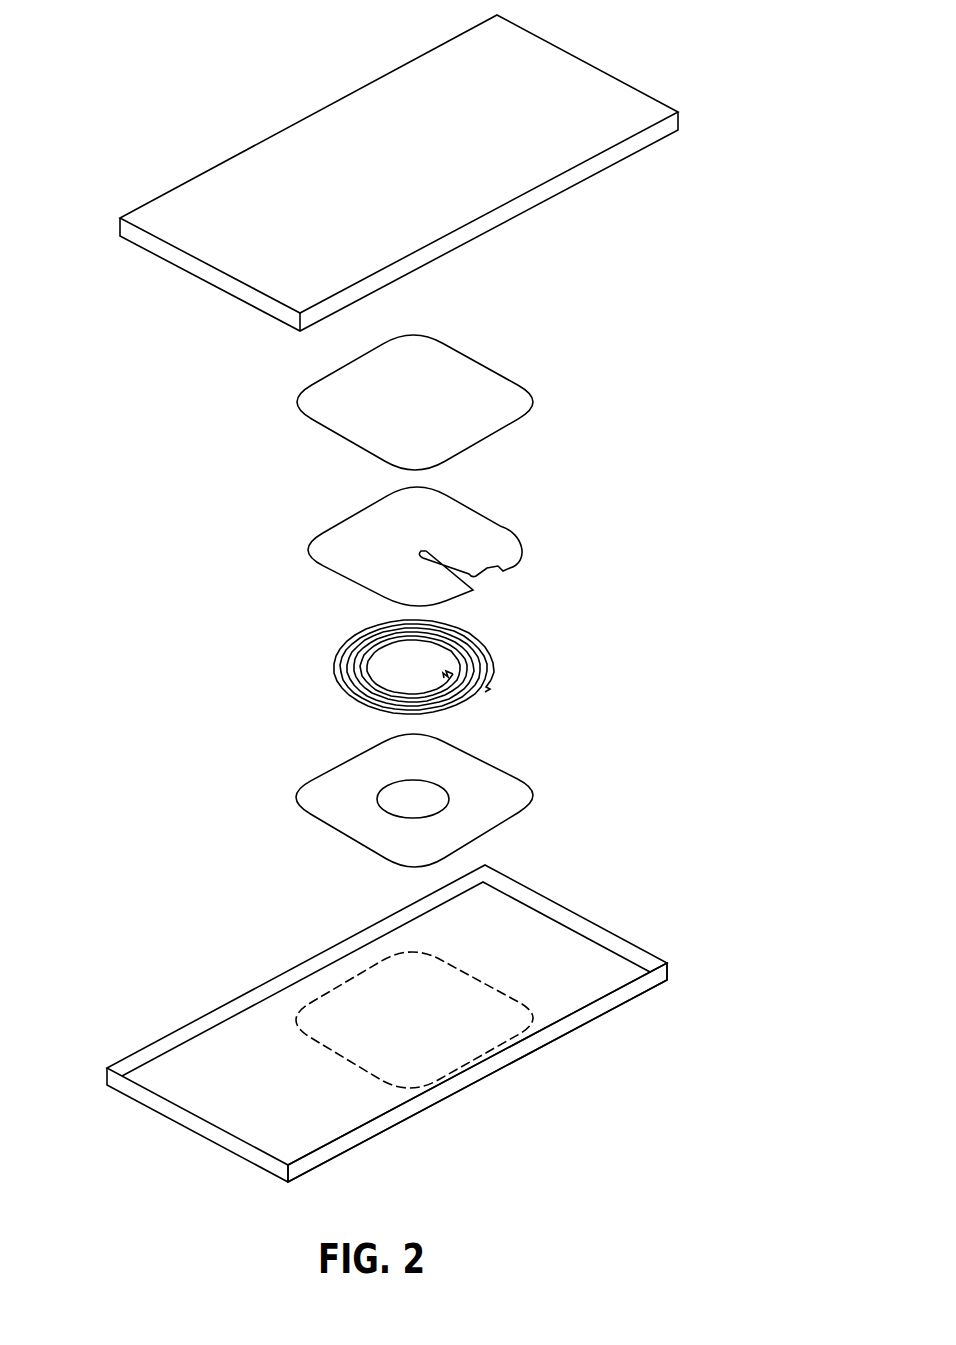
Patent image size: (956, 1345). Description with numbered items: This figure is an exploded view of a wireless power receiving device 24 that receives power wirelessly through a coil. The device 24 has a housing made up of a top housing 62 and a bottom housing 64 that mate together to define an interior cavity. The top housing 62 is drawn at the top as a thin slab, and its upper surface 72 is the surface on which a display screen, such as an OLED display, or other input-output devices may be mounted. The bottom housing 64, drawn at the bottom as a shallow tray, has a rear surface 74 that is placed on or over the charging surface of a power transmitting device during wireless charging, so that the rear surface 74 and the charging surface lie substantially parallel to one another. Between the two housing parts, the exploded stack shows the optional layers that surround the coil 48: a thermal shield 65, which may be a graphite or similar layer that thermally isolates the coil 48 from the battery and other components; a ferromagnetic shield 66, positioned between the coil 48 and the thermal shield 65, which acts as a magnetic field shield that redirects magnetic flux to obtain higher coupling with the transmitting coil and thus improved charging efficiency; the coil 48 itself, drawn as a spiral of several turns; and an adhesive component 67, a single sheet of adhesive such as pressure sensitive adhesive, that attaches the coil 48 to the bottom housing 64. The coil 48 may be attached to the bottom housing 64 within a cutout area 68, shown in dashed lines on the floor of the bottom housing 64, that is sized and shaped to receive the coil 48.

The wireless power receiving device 24 is at (131, 77).
The top housing 62 is at (587, 60).
The surface 72 is at (382, 139).
The thermal shield 65 is at (483, 365).
The ferromagnetic shield 66 is at (483, 510).
The coil 48 is at (493, 663).
The adhesive component 67 is at (533, 797).
The bottom housing 64 is at (577, 913).
The cutout area 68 is at (379, 1002).
The rear surface 74 is at (580, 1027).